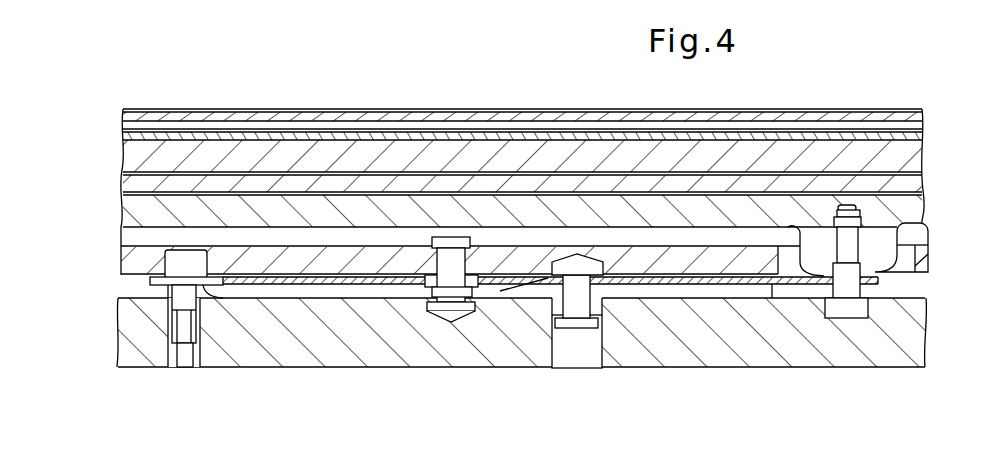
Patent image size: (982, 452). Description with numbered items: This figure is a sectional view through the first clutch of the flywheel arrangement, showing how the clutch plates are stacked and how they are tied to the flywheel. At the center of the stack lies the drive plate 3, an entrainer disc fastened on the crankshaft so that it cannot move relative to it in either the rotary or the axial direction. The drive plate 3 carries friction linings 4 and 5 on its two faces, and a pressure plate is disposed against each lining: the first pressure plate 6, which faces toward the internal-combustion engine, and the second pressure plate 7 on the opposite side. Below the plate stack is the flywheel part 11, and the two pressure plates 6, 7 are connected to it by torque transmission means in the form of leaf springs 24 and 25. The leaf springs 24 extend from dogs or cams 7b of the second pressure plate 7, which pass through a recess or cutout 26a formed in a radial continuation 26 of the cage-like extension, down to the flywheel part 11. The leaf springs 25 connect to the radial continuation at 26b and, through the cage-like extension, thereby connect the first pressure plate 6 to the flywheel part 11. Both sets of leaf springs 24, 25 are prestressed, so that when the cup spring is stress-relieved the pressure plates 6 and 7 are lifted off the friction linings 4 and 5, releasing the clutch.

The drive plate 3 is at (393, 185).
The friction lining 4 is at (315, 178).
The friction lining 5 is at (468, 193).
The first pressure plate 6 is at (226, 150).
The second pressure plate 7 is at (566, 203).
The dog 7b is at (880, 263).
The flywheel part 11 is at (300, 347).
The leaf spring 24 is at (662, 282).
The leaf spring 25 is at (290, 285).
The radial continuation 26 is at (245, 265).
The cutout 26a is at (778, 263).
The radial continuation connection 26b is at (425, 275).